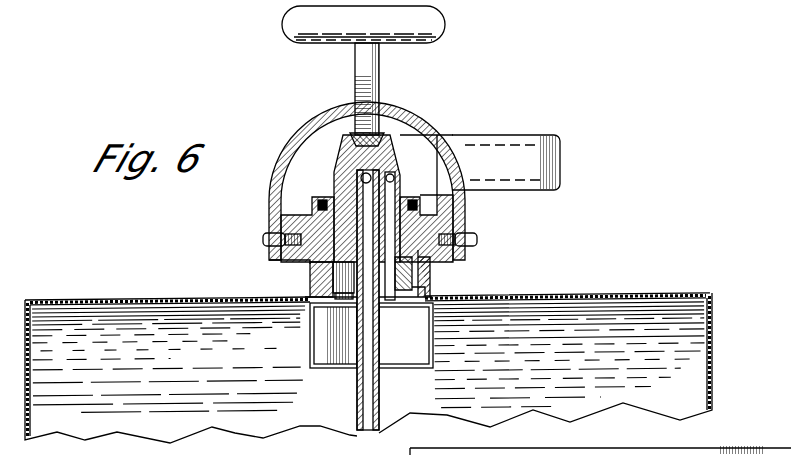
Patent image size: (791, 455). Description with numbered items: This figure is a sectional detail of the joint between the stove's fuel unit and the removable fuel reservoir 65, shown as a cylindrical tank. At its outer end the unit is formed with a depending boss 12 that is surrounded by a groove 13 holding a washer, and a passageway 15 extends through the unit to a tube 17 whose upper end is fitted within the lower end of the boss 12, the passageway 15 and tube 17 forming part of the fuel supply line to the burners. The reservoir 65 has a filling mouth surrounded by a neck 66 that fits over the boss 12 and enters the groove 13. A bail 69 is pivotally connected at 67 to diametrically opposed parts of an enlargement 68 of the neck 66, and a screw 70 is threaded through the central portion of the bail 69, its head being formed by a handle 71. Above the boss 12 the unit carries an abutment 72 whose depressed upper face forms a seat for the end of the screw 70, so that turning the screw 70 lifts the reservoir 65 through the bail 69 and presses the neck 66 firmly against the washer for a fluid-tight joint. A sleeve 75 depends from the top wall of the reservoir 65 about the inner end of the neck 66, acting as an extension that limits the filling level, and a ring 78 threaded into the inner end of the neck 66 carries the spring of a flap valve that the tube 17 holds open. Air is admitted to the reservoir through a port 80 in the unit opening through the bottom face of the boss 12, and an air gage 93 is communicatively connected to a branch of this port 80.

The handle 71 is at (446, 22).
The screw 70 is at (380, 72).
The bail 69 is at (432, 134).
The abutment 72 is at (346, 152).
The passageway 15 is at (401, 163).
The air gage 93 is at (506, 162).
The groove 13 is at (321, 200).
The depending boss 12 is at (286, 214).
The port 80 is at (420, 213).
The pivotal connection 67 is at (262, 240).
The enlargement 68 is at (286, 260).
The neck 66 is at (432, 276).
The ring 78 is at (326, 281).
The fuel reservoir 65 is at (594, 298).
The sleeve 75 is at (333, 368).
The tube 17 is at (381, 398).